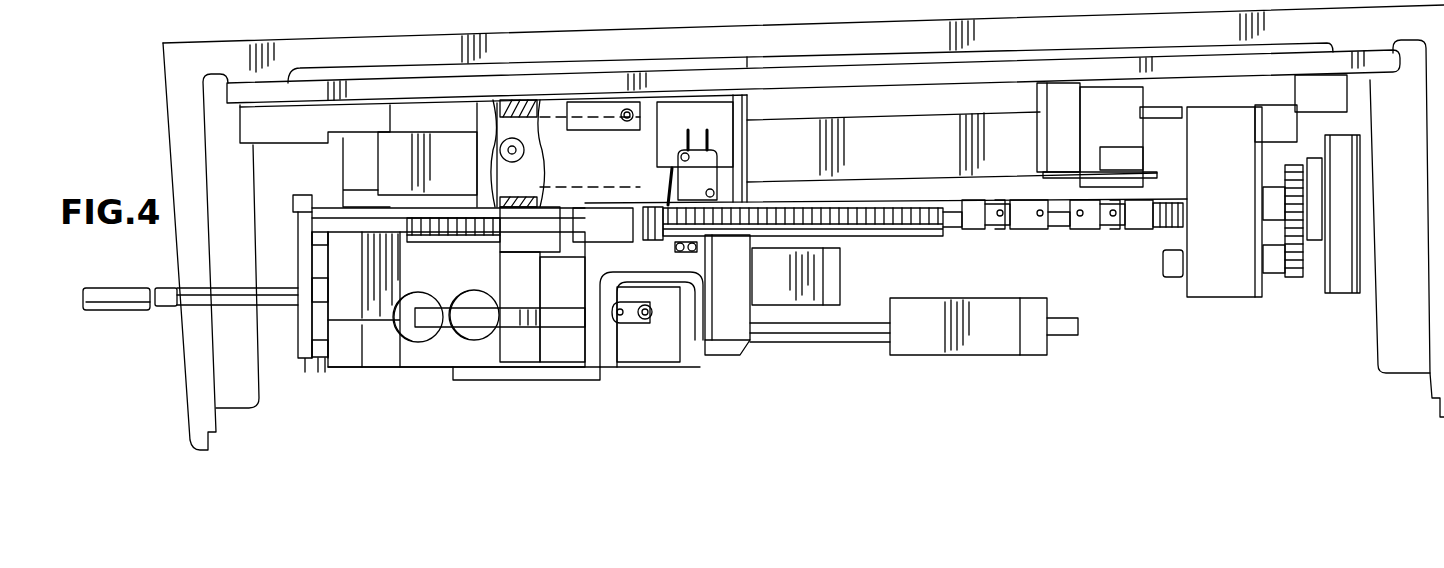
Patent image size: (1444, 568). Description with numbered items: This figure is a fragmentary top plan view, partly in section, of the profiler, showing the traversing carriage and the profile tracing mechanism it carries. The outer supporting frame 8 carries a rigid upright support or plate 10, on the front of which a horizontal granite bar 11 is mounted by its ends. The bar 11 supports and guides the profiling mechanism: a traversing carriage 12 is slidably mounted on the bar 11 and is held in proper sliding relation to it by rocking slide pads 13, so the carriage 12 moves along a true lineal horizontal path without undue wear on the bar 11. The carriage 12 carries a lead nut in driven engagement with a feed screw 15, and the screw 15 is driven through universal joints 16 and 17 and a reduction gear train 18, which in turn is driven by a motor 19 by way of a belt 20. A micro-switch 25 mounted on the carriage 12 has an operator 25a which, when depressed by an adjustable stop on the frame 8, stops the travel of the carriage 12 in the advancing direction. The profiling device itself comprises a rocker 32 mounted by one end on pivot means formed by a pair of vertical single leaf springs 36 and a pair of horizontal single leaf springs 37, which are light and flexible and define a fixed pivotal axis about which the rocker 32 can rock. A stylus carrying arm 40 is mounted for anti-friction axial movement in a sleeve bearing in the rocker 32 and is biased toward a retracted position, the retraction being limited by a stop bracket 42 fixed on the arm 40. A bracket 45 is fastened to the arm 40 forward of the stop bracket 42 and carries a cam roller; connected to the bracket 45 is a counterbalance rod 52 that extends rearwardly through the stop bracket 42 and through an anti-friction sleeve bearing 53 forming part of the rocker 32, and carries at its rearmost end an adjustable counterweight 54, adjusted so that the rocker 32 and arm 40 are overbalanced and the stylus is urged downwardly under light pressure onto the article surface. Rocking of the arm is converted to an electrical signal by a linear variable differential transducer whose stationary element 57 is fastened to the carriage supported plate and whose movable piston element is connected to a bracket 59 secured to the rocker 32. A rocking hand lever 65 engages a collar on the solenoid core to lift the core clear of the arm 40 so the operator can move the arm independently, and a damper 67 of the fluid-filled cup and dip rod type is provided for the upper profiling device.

The outer supporting frame 8 is at (742, 43).
The upright support plate 10 is at (580, 85).
The horizontal granite bar 11 is at (765, 130).
The traversing carriage 12 is at (477, 150).
The rocking slide pads 13 is at (497, 120).
The feed screw 15 is at (877, 229).
The universal joint 16 is at (987, 232).
The universal joint 17 is at (1097, 232).
The reduction gear train 18 is at (1295, 280).
The motor 19 is at (1320, 183).
The belt 20 is at (1345, 295).
The micro-switch 25 is at (720, 178).
The operator 25a is at (670, 200).
The rocker 32 is at (318, 195).
The vertical single leaf springs 36 is at (708, 335).
The horizontal single leaf springs 37 is at (688, 254).
The stylus carrying arm 40 is at (115, 302).
The stop bracket 42 is at (553, 345).
The bracket 45 is at (306, 365).
The counterbalance rod 52 is at (1062, 337).
The sleeve bearing 53 is at (637, 345).
The adjustable counterweight 54 is at (960, 345).
The stationary element 57 is at (420, 300).
The bracket 59 is at (478, 332).
The rocking hand lever 65 is at (512, 372).
The damper 67 is at (497, 289).